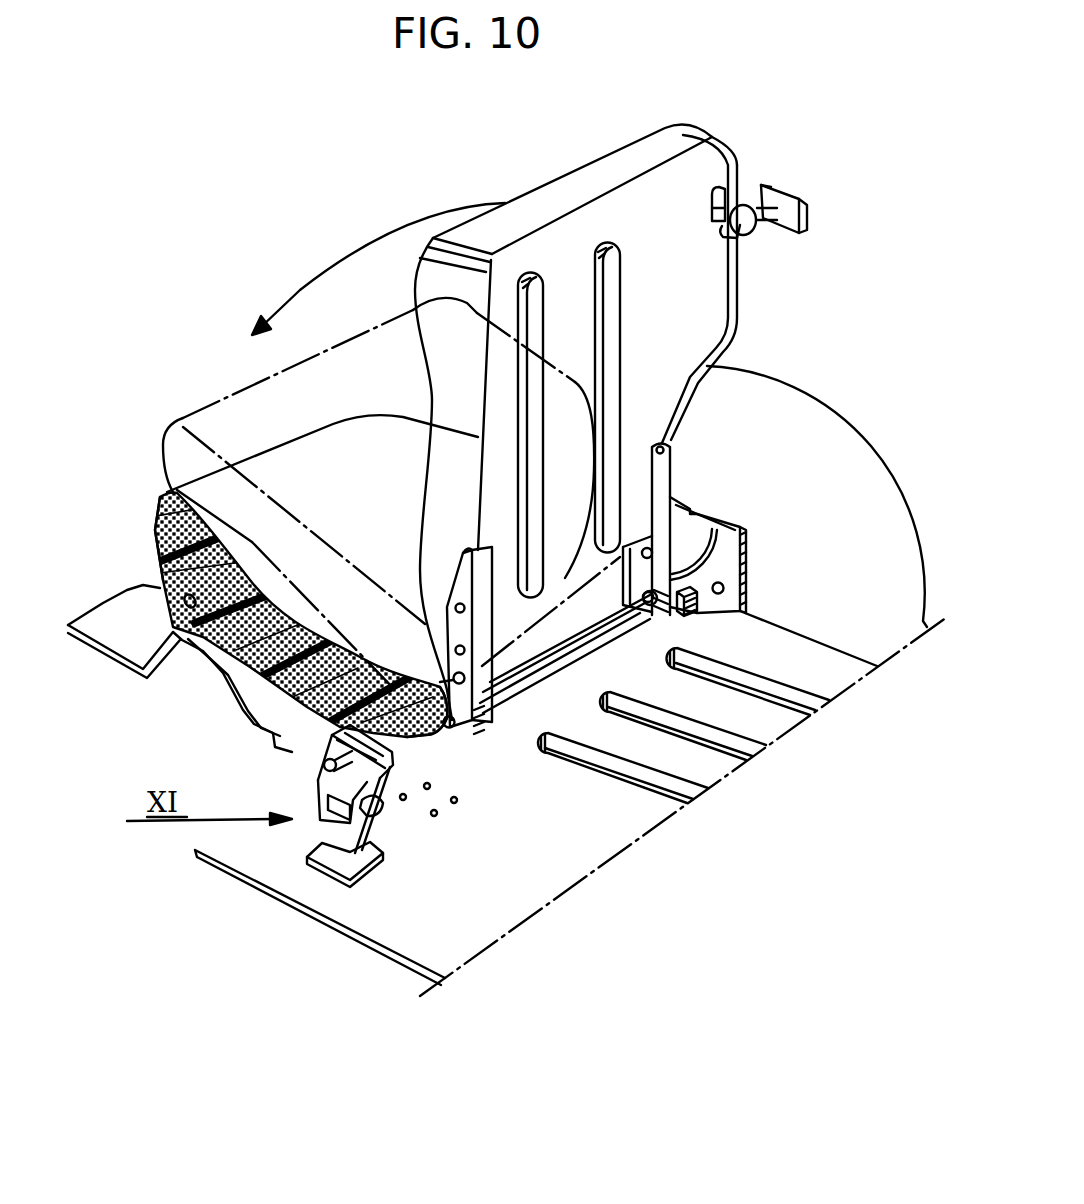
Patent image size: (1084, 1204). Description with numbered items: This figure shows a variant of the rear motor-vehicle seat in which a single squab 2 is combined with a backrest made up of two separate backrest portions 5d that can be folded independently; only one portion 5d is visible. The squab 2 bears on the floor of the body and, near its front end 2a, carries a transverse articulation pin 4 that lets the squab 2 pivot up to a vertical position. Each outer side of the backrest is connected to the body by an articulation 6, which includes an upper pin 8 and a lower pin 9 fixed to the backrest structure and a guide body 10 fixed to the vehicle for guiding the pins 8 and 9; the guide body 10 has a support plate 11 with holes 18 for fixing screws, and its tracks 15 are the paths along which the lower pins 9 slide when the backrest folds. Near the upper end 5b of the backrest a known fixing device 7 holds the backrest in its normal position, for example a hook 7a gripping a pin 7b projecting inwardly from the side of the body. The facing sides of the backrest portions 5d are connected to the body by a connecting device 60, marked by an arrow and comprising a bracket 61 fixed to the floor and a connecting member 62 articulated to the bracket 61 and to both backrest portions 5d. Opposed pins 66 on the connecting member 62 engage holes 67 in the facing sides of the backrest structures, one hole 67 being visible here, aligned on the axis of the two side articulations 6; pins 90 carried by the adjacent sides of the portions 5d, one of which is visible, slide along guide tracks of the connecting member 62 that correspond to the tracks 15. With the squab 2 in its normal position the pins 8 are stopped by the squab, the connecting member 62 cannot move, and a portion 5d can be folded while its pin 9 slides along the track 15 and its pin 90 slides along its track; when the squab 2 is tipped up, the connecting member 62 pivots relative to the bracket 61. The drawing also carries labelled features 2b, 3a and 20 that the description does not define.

The squab 2 is at (250, 668).
The front end of the squab 2a is at (173, 493).
The cushion rear end 2b is at (400, 737).
The base plate 3a is at (643, 822).
The transverse articulation pin 4 is at (172, 588).
The upper end of the backrest 5b is at (443, 272).
The backrest portions 5d is at (440, 472).
The articulation 6 is at (723, 535).
The fixing device 7 is at (757, 260).
The hook 7a is at (745, 207).
The pin 7b is at (778, 232).
The upper pin 8 is at (650, 545).
The lower pin 9 is at (680, 612).
The guide body 10 is at (697, 535).
The support plate 11 is at (735, 540).
The tracks 15 is at (713, 547).
The holes 18 is at (723, 589).
The swing arc 20 is at (847, 437).
The connecting device 60 is at (338, 828).
The bracket 61 is at (335, 835).
The connecting member 62 is at (388, 790).
The pins 66 is at (323, 760).
The holes 67 is at (490, 708).
The pins 90 is at (470, 730).